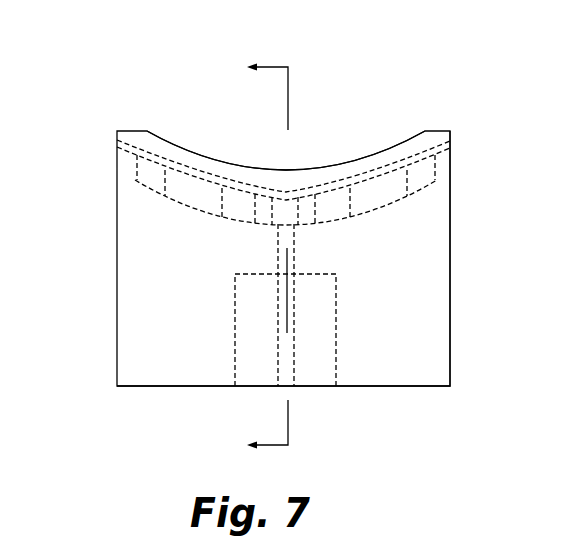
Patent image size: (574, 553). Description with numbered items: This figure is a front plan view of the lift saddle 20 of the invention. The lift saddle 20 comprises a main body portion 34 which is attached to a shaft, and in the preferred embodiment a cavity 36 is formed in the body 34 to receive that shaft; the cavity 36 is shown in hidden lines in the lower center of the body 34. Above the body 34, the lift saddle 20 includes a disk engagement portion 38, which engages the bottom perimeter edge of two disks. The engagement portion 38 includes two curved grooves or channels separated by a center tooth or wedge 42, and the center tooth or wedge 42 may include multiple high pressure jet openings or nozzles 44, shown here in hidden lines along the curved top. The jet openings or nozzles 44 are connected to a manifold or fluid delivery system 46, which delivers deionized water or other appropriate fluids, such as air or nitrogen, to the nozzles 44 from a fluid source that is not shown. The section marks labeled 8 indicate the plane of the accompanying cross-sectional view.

The lift saddle 20 is at (87, 220).
The main body portion 34 is at (428, 347).
The cavity 36 is at (242, 358).
The disk engagement portion 38 is at (352, 138).
The center tooth or wedge 42 is at (433, 160).
The high pressure jet openings or nozzles 44 is at (165, 170).
The manifold or fluid delivery system 46 is at (285, 367).
The section line 8- 8 is at (256, 258).